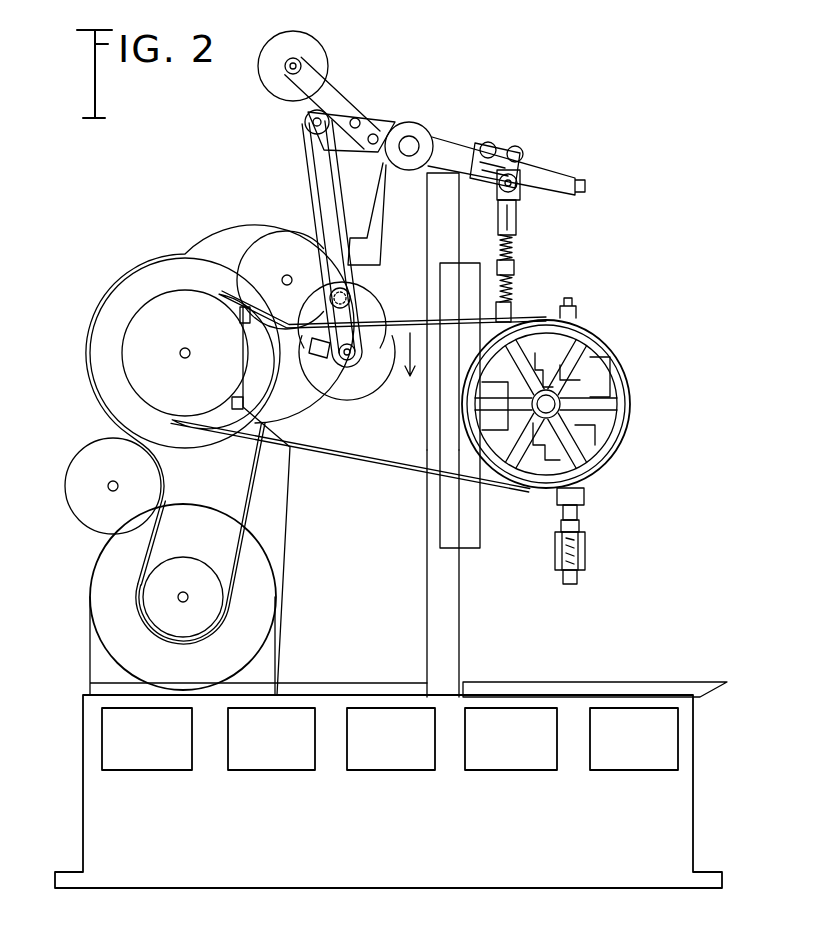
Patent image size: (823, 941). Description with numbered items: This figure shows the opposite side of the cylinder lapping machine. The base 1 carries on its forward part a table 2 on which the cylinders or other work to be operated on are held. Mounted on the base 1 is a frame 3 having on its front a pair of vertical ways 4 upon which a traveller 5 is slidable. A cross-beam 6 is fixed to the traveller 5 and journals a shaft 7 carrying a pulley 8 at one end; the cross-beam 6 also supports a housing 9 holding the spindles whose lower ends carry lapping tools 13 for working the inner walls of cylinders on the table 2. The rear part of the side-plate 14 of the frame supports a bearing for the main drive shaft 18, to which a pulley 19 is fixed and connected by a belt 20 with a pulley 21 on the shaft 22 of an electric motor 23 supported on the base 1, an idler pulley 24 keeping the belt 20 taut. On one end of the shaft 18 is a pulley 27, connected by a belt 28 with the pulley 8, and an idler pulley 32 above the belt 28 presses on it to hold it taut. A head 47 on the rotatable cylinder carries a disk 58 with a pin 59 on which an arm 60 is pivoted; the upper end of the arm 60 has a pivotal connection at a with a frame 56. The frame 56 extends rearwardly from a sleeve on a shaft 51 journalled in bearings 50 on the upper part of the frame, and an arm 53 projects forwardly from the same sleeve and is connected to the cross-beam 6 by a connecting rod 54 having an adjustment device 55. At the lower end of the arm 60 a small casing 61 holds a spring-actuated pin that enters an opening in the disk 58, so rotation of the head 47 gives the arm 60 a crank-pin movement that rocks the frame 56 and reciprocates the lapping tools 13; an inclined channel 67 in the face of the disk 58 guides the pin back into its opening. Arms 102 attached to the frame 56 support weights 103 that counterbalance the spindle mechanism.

The base 1 is at (680, 799).
The table 2 is at (631, 690).
The frame 3 is at (420, 222).
The vertical ways 4 is at (445, 588).
The traveller 5 is at (466, 503).
The cross-beam 6 is at (559, 386).
The shaft 7 is at (560, 405).
The pulley 8 is at (622, 431).
The housing 9 is at (595, 385).
The lapping tools 13 is at (587, 553).
The side-plate 14 is at (297, 503).
The shaft 18 is at (184, 348).
The pulley 19 is at (148, 276).
The belt 20 is at (252, 466).
The pulley 21 is at (183, 568).
The shaft 22 is at (184, 601).
The electric motor 23 is at (97, 579).
The idler pulley 24 is at (75, 490).
The pulley 27 is at (138, 373).
The belt 28 is at (362, 461).
The idler pulley 32 is at (268, 256).
The head 47 is at (363, 397).
The bearings 50 is at (413, 122).
The shaft 51 is at (382, 214).
The arm 53 is at (462, 150).
The connecting rod 54 is at (518, 222).
The adjustment device 55 is at (515, 267).
The frame 56 is at (378, 125).
The disk 58 is at (368, 298).
The pin 59 is at (329, 292).
The arm 60 is at (318, 191).
The casing 61 is at (345, 362).
The inclined channel 67 is at (316, 358).
The arms 102 is at (336, 101).
The weights 103 is at (279, 52).
The pivotal connection a is at (305, 122).